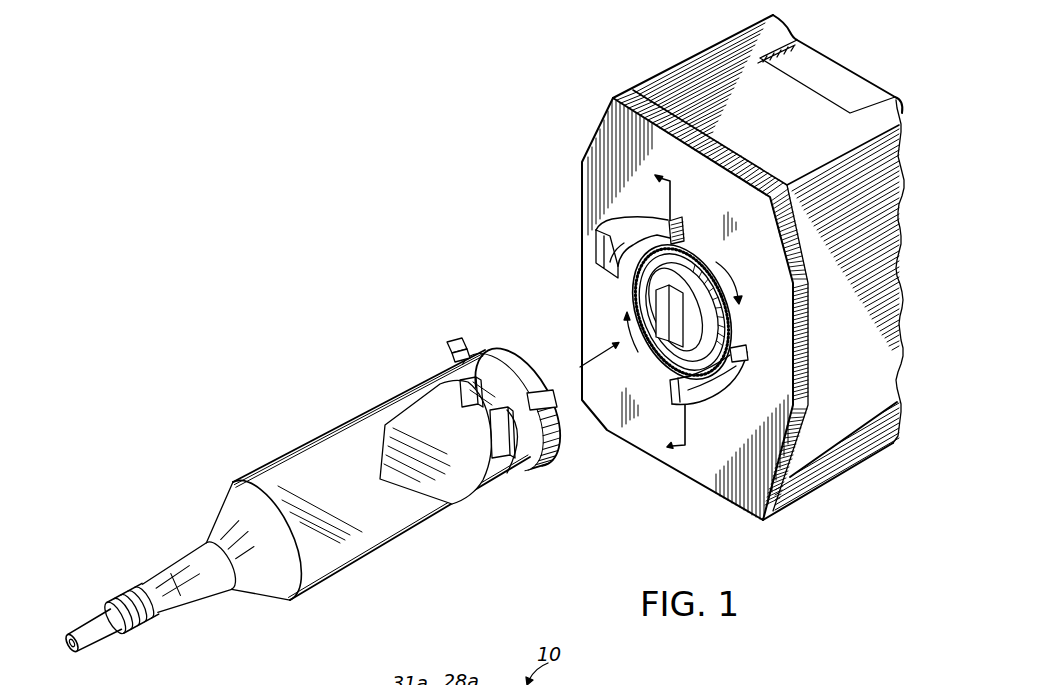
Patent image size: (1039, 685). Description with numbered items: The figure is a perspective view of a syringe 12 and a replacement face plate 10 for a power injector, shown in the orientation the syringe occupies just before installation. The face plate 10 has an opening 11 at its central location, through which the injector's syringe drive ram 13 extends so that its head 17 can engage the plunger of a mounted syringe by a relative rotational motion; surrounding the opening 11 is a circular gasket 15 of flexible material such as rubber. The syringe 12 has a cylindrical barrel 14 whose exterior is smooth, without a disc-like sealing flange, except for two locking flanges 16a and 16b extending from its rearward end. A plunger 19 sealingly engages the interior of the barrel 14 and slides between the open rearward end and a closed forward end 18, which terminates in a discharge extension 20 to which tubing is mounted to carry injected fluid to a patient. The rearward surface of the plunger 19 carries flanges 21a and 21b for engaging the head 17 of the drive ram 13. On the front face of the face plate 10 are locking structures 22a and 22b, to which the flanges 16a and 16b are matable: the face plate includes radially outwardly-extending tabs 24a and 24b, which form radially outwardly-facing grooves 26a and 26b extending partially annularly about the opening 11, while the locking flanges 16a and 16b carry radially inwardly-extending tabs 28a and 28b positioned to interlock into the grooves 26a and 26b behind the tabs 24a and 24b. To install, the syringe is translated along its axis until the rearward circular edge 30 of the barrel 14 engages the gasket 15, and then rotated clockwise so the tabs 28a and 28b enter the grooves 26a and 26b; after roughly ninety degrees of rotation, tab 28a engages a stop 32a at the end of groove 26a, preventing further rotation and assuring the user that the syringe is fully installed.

The replacement face plate 10 is at (582, 172).
The opening 11 is at (683, 352).
The syringe 12 is at (308, 438).
The syringe drive ram 13 is at (692, 268).
The cylindrical barrel 14 is at (417, 531).
The circular gasket 15 is at (718, 283).
The locking flange 16a is at (447, 347).
The locking flange 16b is at (560, 447).
The head 17 is at (668, 313).
The closed forward end 18 is at (216, 517).
The plunger 19 is at (382, 466).
The discharge extension 20 is at (148, 582).
The flange 21a is at (480, 380).
The flange 21b is at (512, 462).
The locking structure 22a is at (600, 238).
The locking structure 22b is at (755, 398).
The radially outwardly-extending tab 24a is at (600, 256).
The radially outwardly-extending tab 24b is at (750, 368).
The radially outwardly-facing groove 26a is at (671, 216).
The radially outwardly-facing groove 26b is at (748, 352).
The radially inwardly-extending tab 28a is at (466, 346).
The radially inwardly-extending tab 28b is at (543, 392).
The rearward circular edge 30 is at (497, 352).
The stop 32a is at (684, 224).